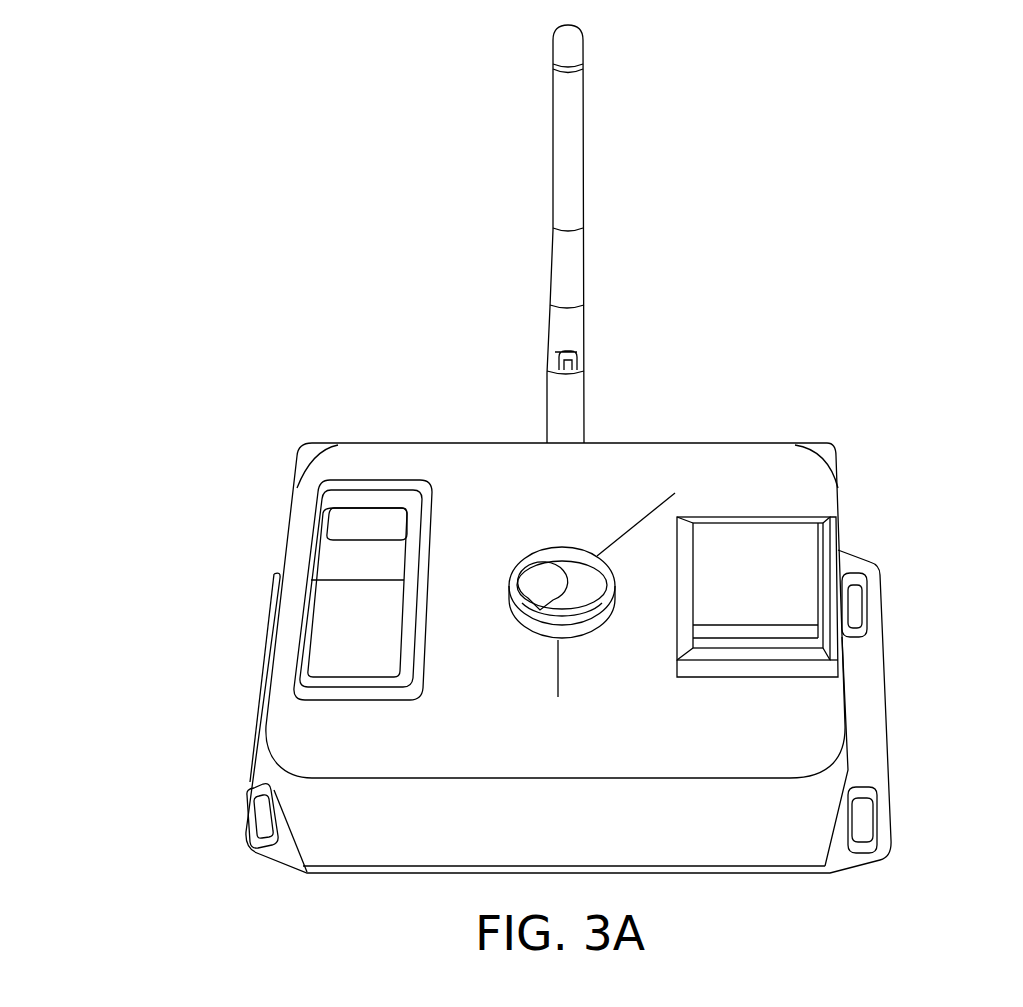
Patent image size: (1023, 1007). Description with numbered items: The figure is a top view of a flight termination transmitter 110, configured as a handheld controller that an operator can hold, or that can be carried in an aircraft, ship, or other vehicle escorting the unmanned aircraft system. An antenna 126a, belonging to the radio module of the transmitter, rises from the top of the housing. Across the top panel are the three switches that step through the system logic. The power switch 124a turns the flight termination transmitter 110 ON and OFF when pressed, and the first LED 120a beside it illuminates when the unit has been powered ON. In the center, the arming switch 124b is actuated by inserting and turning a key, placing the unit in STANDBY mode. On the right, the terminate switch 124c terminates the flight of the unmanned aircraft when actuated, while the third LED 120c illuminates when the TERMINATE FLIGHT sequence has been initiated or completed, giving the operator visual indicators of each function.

The flight termination transmitter 110 is at (860, 247).
The antenna 126a is at (566, 161).
The power switch 124a is at (337, 613).
The first LED 120a is at (347, 527).
The arming switch 124b is at (588, 602).
The terminate switch 124c is at (787, 605).
The third LED 120c is at (802, 555).